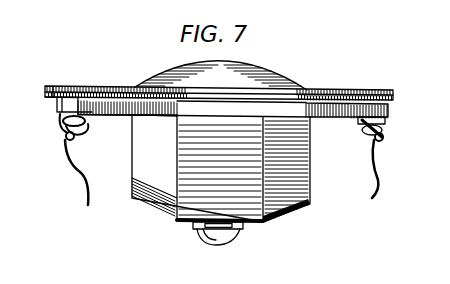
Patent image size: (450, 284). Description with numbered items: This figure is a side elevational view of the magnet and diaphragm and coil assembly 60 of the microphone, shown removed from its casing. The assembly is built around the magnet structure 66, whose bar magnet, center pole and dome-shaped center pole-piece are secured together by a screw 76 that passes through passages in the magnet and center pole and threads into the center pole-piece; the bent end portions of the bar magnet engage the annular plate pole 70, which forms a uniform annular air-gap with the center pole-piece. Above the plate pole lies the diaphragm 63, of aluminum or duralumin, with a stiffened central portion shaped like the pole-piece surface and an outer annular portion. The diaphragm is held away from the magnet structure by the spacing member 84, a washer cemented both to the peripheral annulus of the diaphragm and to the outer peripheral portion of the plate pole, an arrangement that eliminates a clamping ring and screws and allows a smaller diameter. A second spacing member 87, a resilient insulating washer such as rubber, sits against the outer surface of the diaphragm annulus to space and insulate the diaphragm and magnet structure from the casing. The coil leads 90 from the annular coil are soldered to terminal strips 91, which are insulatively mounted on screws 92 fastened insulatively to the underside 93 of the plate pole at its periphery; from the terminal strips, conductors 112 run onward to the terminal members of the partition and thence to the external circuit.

The magnet and diaphragm and coil assembly 60 is at (310, 165).
The diaphragm 63 is at (266, 79).
The magnet structure 66 is at (278, 215).
The plate pole 70 is at (358, 101).
The screw 76 is at (222, 240).
The spacing member 84 is at (393, 100).
The spacing member 87 is at (319, 94).
The coil leads 90 is at (56, 128).
The terminal strips 91 is at (63, 136).
The screws 92 is at (73, 138).
The underside of the plate pole 93 is at (113, 113).
The conductors 112 is at (72, 171).